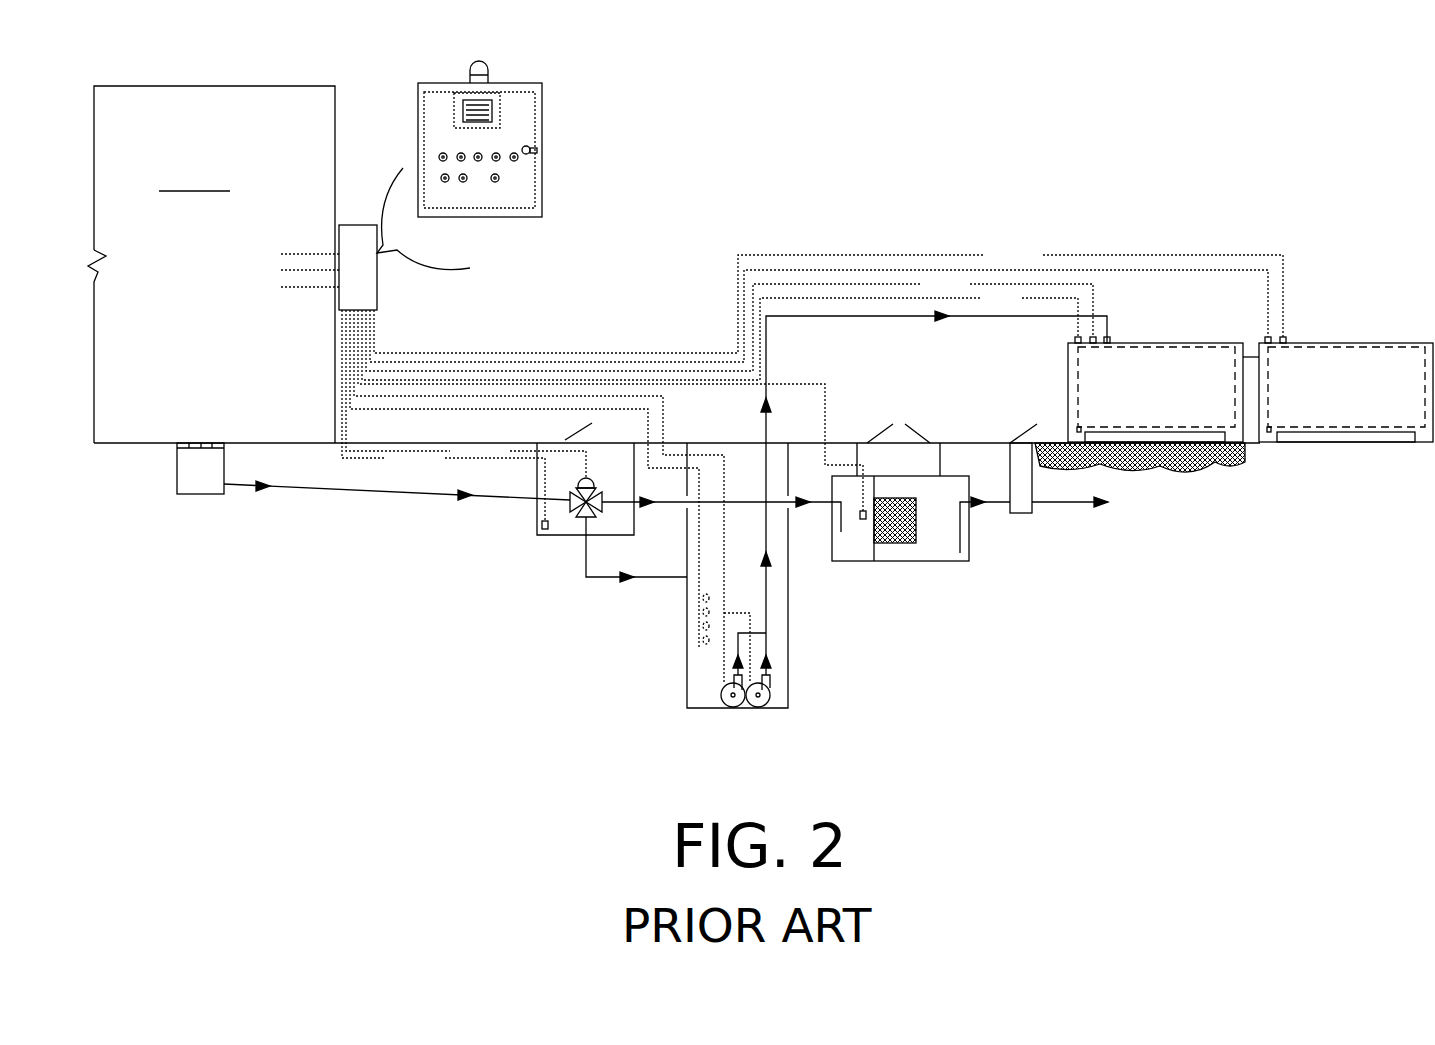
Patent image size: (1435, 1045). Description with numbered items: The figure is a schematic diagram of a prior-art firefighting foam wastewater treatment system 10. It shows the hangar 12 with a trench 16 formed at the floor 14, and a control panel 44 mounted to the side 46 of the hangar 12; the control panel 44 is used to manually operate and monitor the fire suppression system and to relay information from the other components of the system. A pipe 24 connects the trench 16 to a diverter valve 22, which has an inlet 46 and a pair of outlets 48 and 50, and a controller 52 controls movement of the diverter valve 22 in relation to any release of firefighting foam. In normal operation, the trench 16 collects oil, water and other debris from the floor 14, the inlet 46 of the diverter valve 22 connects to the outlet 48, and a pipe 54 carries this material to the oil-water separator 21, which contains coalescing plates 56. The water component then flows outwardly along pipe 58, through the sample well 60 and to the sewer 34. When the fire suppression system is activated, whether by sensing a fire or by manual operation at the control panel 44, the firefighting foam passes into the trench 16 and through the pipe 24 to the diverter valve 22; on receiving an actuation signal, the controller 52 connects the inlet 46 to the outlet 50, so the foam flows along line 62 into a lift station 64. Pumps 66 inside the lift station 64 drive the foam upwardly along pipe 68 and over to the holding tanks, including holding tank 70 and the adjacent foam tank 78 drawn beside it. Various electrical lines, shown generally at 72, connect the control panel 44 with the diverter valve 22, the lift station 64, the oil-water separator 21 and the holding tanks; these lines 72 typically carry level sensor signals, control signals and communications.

The firefighting foam wastewater treatment system 10 is at (1000, 142).
The hangar 12 is at (285, 86).
The floor 14 is at (263, 441).
The trench 16 is at (177, 472).
The oil-water separator 21 is at (903, 561).
The diverter valve 22 is at (545, 537).
The pipe 24 is at (377, 493).
The sewer 34 is at (1090, 510).
The control panel 44 is at (542, 112).
The side of the hangar / inlet of the diverter valve 46 is at (335, 166).
The outlet 48 is at (592, 502).
The outlet 50 is at (583, 520).
The controller 52 is at (589, 480).
The pipe 54 is at (792, 505).
The coalescing plates 56 is at (917, 508).
The pipe 58 is at (995, 505).
The sample well 60 is at (1025, 513).
The line 62 is at (655, 580).
The lift station 64 is at (790, 656).
The pumps 66 is at (758, 708).
The pipe 68 is at (769, 412).
The holding tank 70 is at (1322, 355).
The electrical lines 72 is at (840, 254).
The foam tank 78 is at (1155, 355).